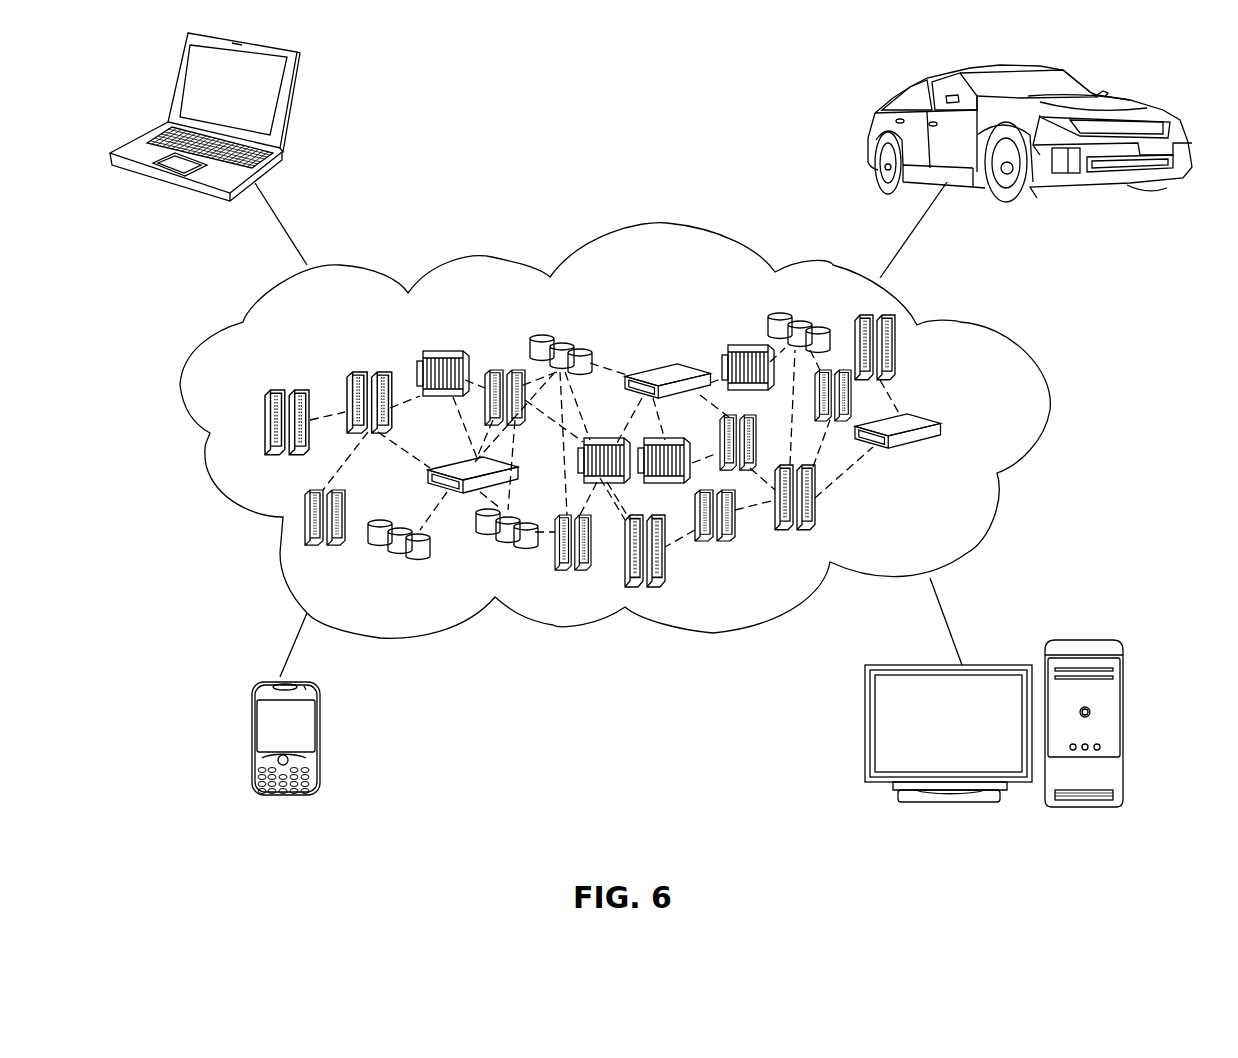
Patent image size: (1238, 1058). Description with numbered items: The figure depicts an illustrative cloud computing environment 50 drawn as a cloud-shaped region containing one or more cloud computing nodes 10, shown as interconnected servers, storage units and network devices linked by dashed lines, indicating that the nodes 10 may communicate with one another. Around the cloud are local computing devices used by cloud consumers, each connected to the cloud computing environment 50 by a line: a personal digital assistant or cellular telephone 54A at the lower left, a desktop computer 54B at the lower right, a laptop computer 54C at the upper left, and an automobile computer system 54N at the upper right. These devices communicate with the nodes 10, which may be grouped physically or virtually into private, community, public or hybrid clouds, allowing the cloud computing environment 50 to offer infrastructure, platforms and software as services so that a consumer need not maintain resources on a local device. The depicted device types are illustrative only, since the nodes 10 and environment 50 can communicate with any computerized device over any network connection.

The cloud computing nodes 10 is at (982, 427).
The cloud computing environment 50 is at (1007, 340).
The personal digital assistant (PDA) or cellular telephone 54A is at (250, 742).
The desktop computer 54B is at (1090, 640).
The laptop computer 54C is at (292, 104).
The automobile computer system 54N is at (876, 110).